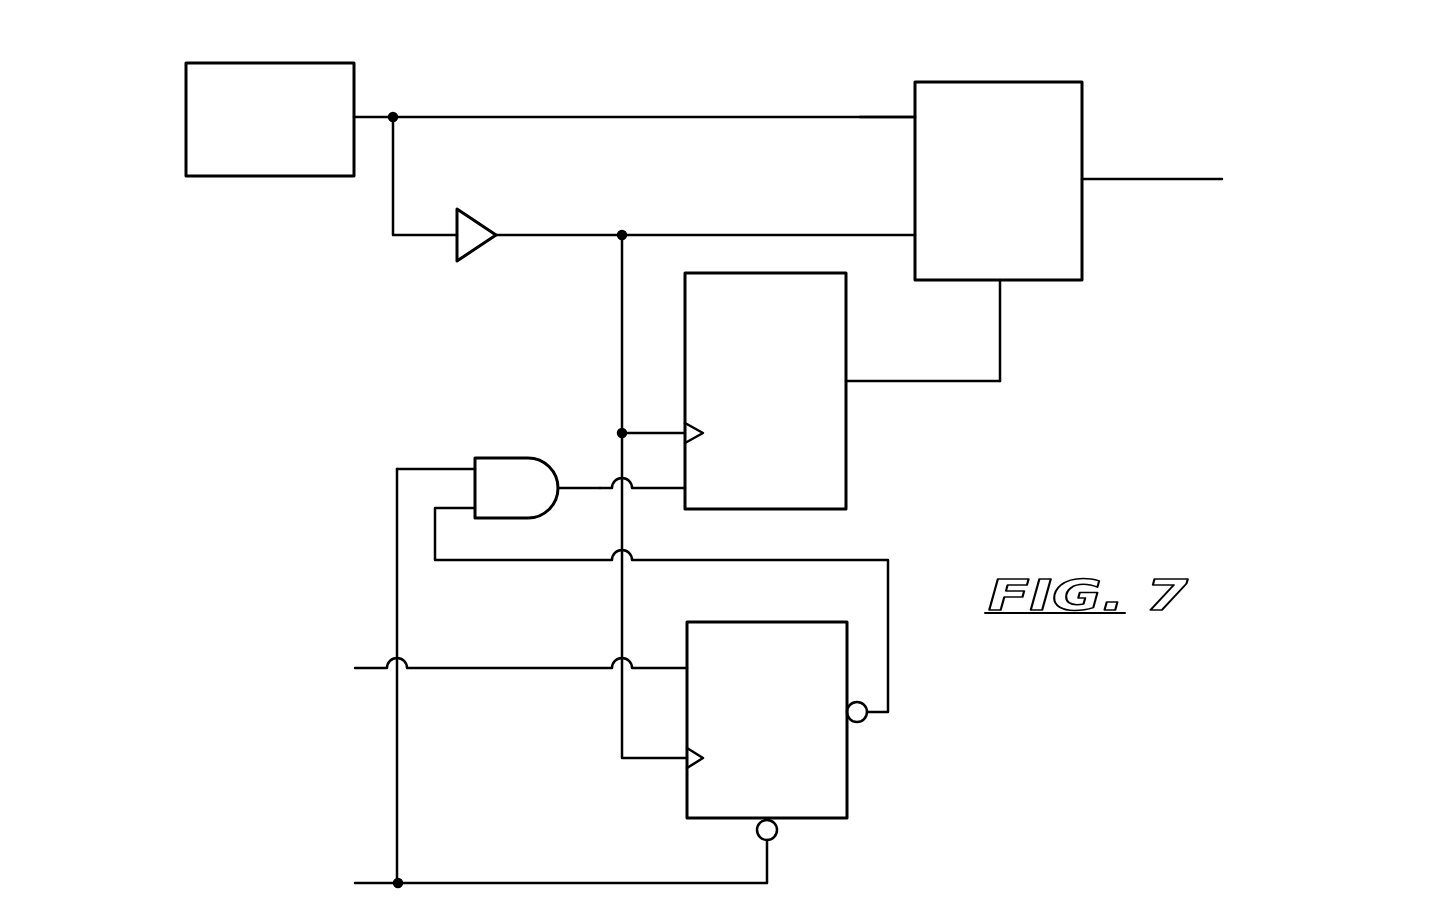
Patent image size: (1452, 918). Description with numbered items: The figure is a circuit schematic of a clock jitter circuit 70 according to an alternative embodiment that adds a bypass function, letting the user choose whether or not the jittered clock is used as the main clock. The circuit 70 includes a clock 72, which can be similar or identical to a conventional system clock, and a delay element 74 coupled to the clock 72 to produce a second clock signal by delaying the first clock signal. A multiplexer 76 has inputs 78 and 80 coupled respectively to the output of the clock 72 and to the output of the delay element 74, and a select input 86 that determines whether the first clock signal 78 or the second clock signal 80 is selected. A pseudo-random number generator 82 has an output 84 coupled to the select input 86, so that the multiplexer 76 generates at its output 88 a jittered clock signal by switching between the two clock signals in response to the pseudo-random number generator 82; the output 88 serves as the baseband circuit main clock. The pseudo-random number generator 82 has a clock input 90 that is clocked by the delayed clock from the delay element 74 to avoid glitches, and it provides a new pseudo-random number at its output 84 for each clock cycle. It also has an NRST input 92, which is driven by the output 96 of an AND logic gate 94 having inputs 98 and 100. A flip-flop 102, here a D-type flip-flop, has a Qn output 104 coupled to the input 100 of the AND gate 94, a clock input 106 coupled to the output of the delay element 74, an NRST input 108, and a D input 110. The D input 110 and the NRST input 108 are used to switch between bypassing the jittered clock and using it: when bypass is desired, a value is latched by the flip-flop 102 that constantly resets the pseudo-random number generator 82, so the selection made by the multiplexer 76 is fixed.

The circuit 70 is at (208, 425).
The clock 72 is at (261, 176).
The delay element 74 is at (481, 247).
The multiplexer 76 is at (1010, 80).
The input 78 is at (912, 118).
The input 80 is at (913, 230).
The pseudo-random number generator 82 is at (847, 453).
The output 84 is at (847, 377).
The select input 86 is at (1000, 283).
The output 88 is at (1083, 182).
The clock input 90 is at (686, 427).
The NRST input 92 is at (686, 490).
The AND logic gate 94 is at (507, 458).
The output 96 is at (560, 487).
The input 98 is at (473, 463).
The input 100 is at (473, 512).
The flip-flop 102 is at (753, 622).
The Qn output 104 is at (868, 717).
The clock input 106 is at (687, 767).
The NRST input 108 is at (767, 842).
The D input 110 is at (685, 665).